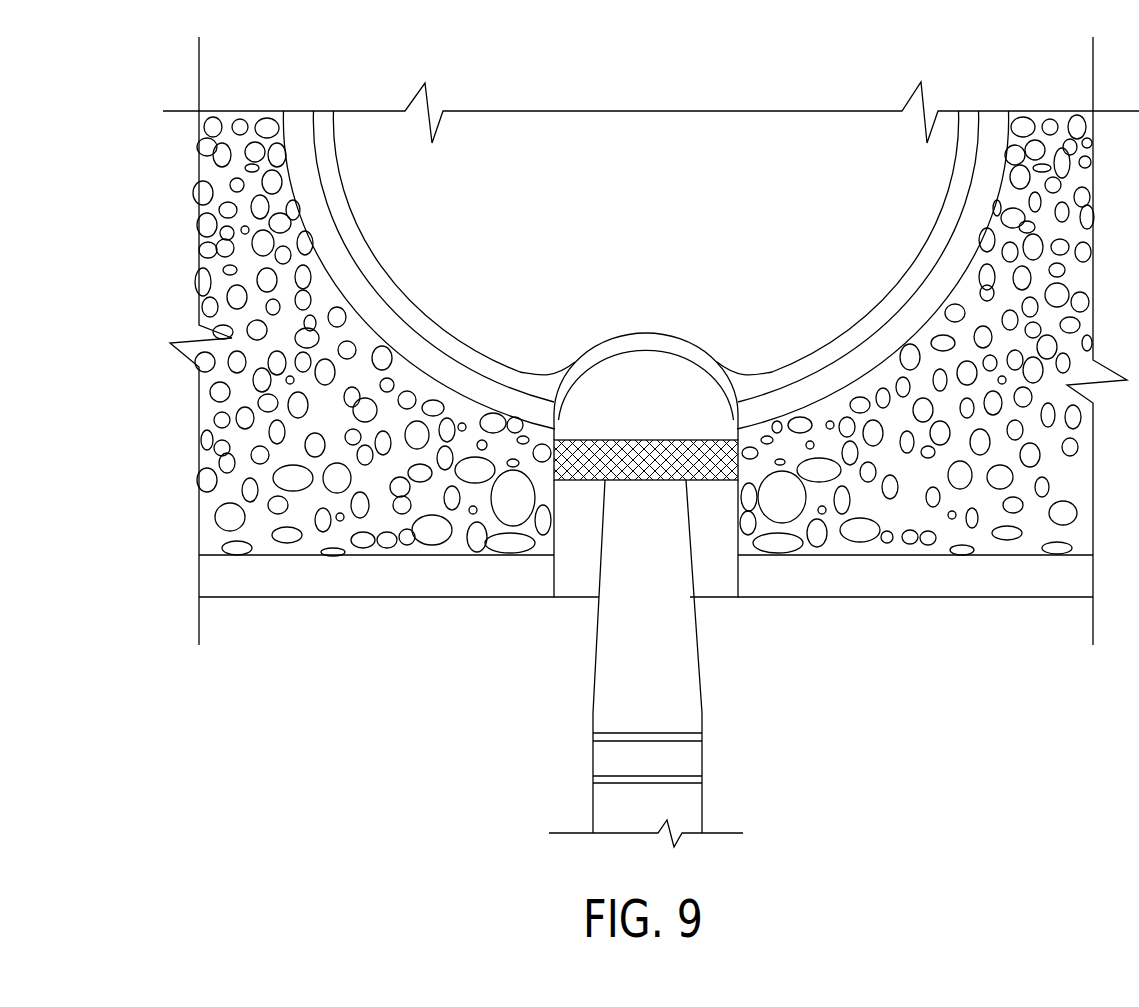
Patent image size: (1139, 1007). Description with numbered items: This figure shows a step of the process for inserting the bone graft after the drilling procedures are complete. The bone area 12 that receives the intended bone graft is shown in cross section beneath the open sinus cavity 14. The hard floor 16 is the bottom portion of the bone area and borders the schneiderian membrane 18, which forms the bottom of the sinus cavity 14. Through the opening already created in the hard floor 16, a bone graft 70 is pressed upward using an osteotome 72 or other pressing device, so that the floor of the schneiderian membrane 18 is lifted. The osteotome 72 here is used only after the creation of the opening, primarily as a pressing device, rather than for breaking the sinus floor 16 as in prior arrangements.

The bone area 12 is at (963, 395).
The sinus cavity 14 is at (630, 190).
The hard floor 16 is at (468, 383).
The schneiderian membrane 18 is at (395, 290).
The bone graft 70 is at (645, 383).
The osteotome 72 is at (633, 647).